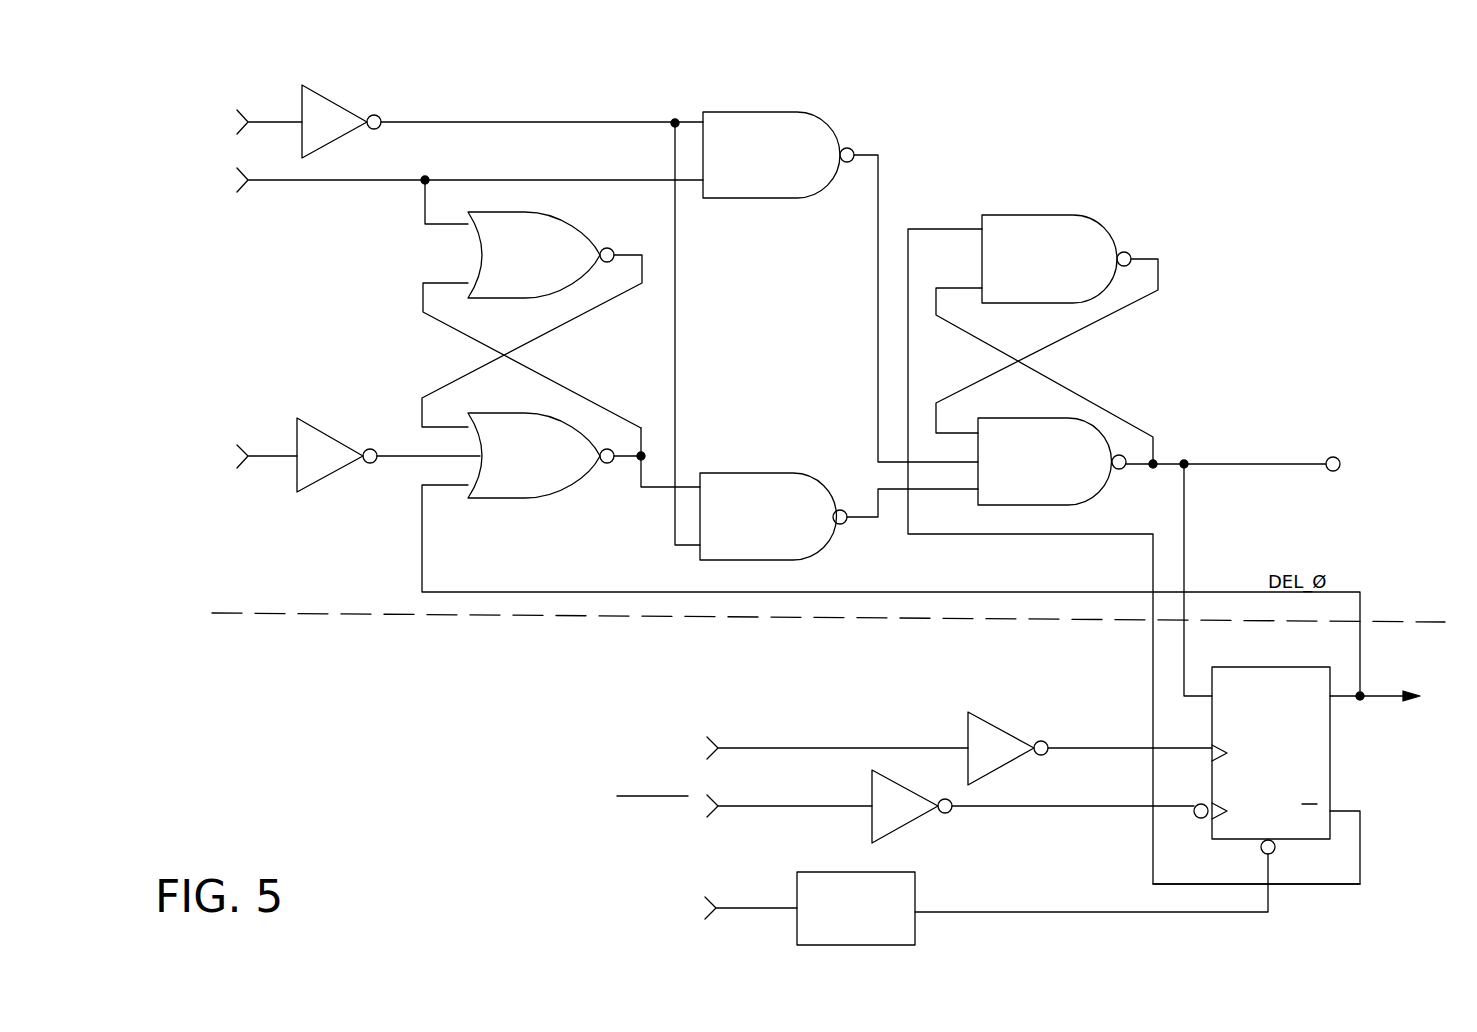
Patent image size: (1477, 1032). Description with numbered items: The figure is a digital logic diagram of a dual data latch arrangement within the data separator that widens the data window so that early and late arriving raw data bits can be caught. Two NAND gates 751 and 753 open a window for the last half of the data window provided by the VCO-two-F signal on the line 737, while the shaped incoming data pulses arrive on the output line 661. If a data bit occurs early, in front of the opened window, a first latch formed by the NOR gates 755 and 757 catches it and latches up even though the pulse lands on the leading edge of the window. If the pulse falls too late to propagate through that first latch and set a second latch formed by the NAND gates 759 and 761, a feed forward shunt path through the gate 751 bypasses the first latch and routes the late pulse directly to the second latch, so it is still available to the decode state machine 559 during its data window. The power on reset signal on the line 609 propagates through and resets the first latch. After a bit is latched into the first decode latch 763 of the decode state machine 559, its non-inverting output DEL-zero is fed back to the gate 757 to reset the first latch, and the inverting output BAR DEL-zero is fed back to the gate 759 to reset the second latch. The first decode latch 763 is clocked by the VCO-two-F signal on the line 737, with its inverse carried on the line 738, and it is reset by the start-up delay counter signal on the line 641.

The line 737 is at (272, 122).
The output line 661 is at (275, 180).
The line 609 is at (260, 456).
The NOR gate 755 is at (570, 235).
The NOR gate 757 is at (533, 492).
The NAND gate 751 is at (808, 130).
The NAND gate 753 is at (750, 483).
The NAND gate 759 is at (1085, 230).
The NAND gate 761 is at (1090, 478).
The first decode latch 763 is at (1330, 760).
The line 738 is at (755, 806).
The output line 641 is at (752, 908).
The decode state machine 559 is at (1368, 870).